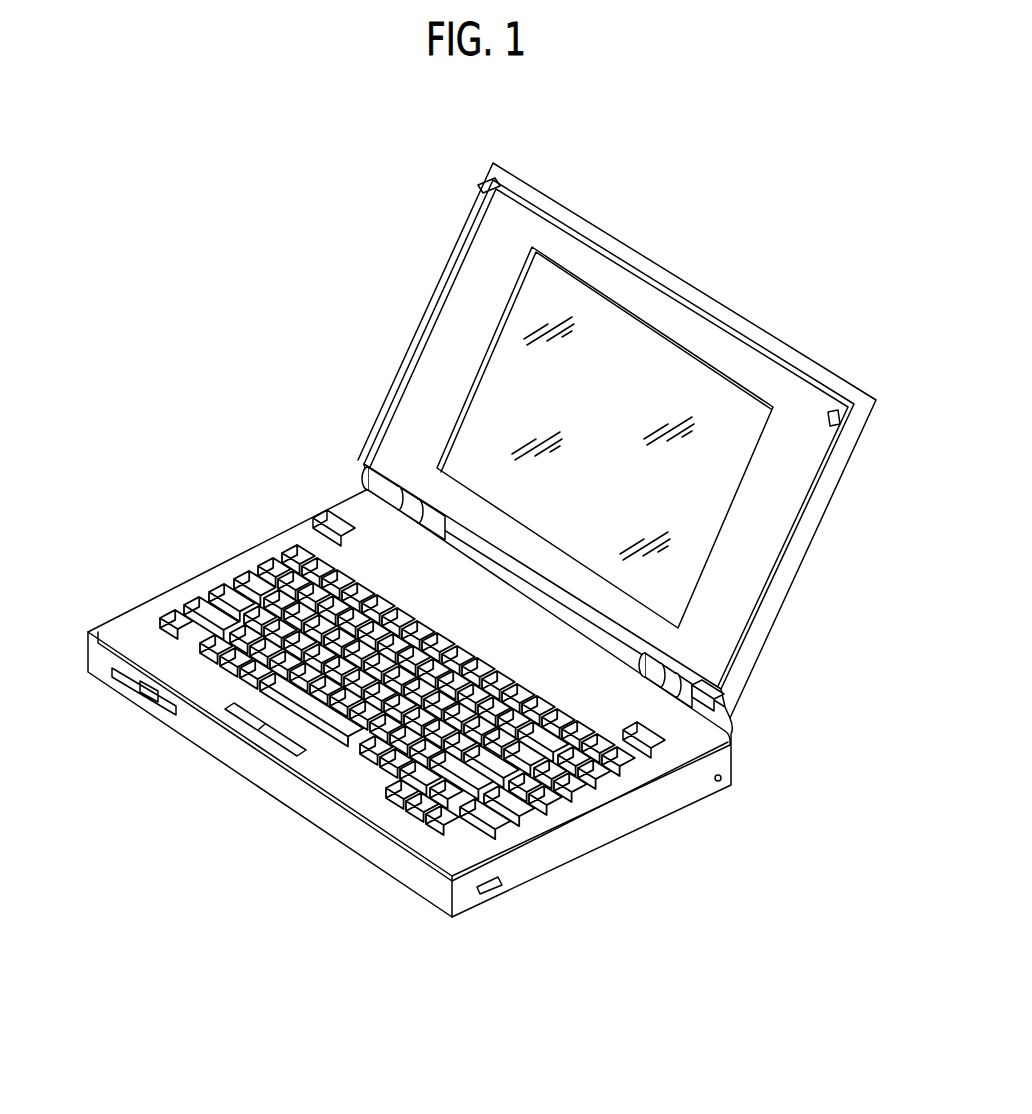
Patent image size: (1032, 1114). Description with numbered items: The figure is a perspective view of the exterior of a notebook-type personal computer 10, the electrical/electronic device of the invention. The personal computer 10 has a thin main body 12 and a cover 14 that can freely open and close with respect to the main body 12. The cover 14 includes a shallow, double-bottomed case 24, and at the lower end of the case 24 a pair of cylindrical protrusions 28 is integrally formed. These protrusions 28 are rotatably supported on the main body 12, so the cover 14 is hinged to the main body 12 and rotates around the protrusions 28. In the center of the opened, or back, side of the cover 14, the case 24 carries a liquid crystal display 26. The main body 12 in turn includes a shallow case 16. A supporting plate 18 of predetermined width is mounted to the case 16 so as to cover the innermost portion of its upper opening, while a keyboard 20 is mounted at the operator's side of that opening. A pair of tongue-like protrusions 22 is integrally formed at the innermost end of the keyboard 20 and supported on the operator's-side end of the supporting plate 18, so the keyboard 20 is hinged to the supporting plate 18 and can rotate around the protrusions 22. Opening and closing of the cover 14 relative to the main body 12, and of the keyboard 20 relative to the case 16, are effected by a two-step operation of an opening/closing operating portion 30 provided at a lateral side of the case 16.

The personal computer 10 is at (492, 569).
The main body 12 is at (421, 711).
The cover 14 is at (647, 448).
The case 16 is at (245, 760).
The supporting plate 18 is at (665, 737).
The keyboard 20 is at (133, 628).
The protrusions 22 is at (314, 516).
The case 24 is at (802, 542).
The liquid crystal display 26 is at (638, 352).
The protrusions 28 is at (368, 467).
The opening/closing operating portion 30 is at (503, 882).